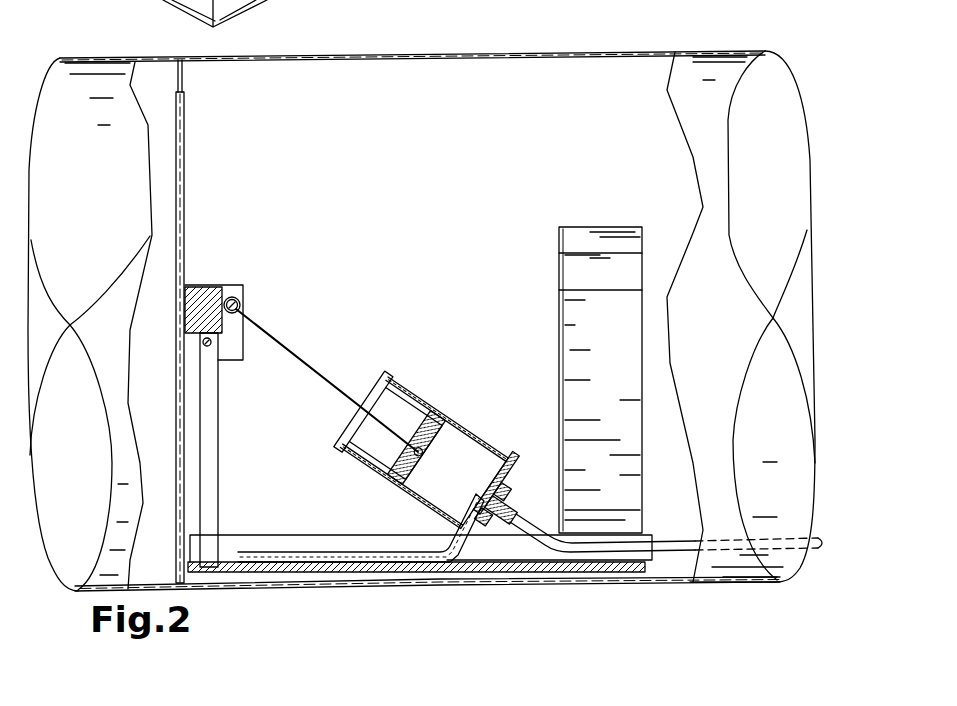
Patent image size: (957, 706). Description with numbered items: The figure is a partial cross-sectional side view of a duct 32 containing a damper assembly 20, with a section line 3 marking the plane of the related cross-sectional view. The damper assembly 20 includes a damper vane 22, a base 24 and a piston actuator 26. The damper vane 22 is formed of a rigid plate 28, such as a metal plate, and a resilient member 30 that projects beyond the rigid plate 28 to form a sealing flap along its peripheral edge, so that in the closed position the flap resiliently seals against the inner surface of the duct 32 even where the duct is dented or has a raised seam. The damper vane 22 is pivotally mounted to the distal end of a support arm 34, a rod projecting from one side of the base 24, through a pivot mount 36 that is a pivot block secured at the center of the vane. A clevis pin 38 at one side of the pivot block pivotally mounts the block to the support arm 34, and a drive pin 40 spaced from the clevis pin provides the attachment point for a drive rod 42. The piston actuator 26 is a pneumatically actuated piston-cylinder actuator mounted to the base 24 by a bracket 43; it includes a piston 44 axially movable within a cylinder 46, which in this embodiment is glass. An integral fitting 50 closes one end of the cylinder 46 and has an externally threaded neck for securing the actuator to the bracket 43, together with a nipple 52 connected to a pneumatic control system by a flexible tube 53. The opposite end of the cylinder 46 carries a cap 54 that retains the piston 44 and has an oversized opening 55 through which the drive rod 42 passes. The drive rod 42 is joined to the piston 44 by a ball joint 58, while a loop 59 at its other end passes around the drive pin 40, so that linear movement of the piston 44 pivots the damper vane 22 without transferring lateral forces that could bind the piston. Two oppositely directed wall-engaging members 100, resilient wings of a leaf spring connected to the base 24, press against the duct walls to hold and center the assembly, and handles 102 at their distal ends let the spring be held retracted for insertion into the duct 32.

The section line 3- 3 is at (660, 47).
The damper assembly 20 is at (803, 47).
The damper vane 22 is at (210, 163).
The base 24 is at (476, 548).
The piston actuator 26 is at (438, 368).
The rigid plate 28 is at (186, 193).
The resilient member 30 is at (184, 72).
The duct 32 is at (346, 57).
The support arm 34 is at (215, 490).
The pivot mount 36 is at (210, 287).
The clevis pin 38 is at (203, 343).
The drive pin 40 is at (240, 298).
The drive rod 42 is at (283, 350).
The bracket 43 is at (315, 573).
The piston 44 is at (450, 426).
The cylinder 46 is at (470, 447).
The fitting 50 is at (462, 502).
The nipple 52 is at (510, 511).
The flexible tube 53 is at (565, 551).
The cap 54 is at (386, 379).
The oversized opening 55 is at (350, 425).
The ball joint 58 is at (396, 478).
The loop 59 is at (248, 309).
The wall-engaging members 100 is at (587, 322).
The handles 102 is at (573, 277).